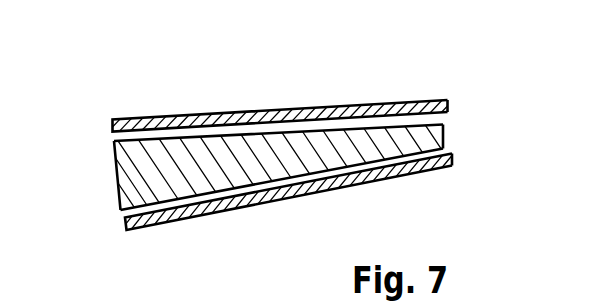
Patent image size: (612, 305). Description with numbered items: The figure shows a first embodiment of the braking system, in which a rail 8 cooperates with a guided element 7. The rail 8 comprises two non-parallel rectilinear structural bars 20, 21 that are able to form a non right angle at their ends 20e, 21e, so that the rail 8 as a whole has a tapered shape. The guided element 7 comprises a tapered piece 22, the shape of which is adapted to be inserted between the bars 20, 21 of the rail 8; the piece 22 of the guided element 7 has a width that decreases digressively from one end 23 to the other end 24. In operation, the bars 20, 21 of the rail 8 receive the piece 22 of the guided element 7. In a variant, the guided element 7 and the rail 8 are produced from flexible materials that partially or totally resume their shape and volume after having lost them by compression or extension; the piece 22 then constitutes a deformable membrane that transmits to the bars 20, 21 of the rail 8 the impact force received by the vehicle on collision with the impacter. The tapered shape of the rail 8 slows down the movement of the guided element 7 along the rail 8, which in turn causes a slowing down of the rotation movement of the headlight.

The rail 8 is at (397, 44).
The structural bar 20 is at (348, 107).
The end of structural bar 20e is at (447, 104).
The structural bar 21 is at (311, 187).
The end of structural bar 21e is at (452, 161).
The tapered piece 22 is at (247, 150).
The guided element 7 is at (132, 186).
The end of the piece 23 is at (113, 168).
The end of the piece 24 is at (445, 128).